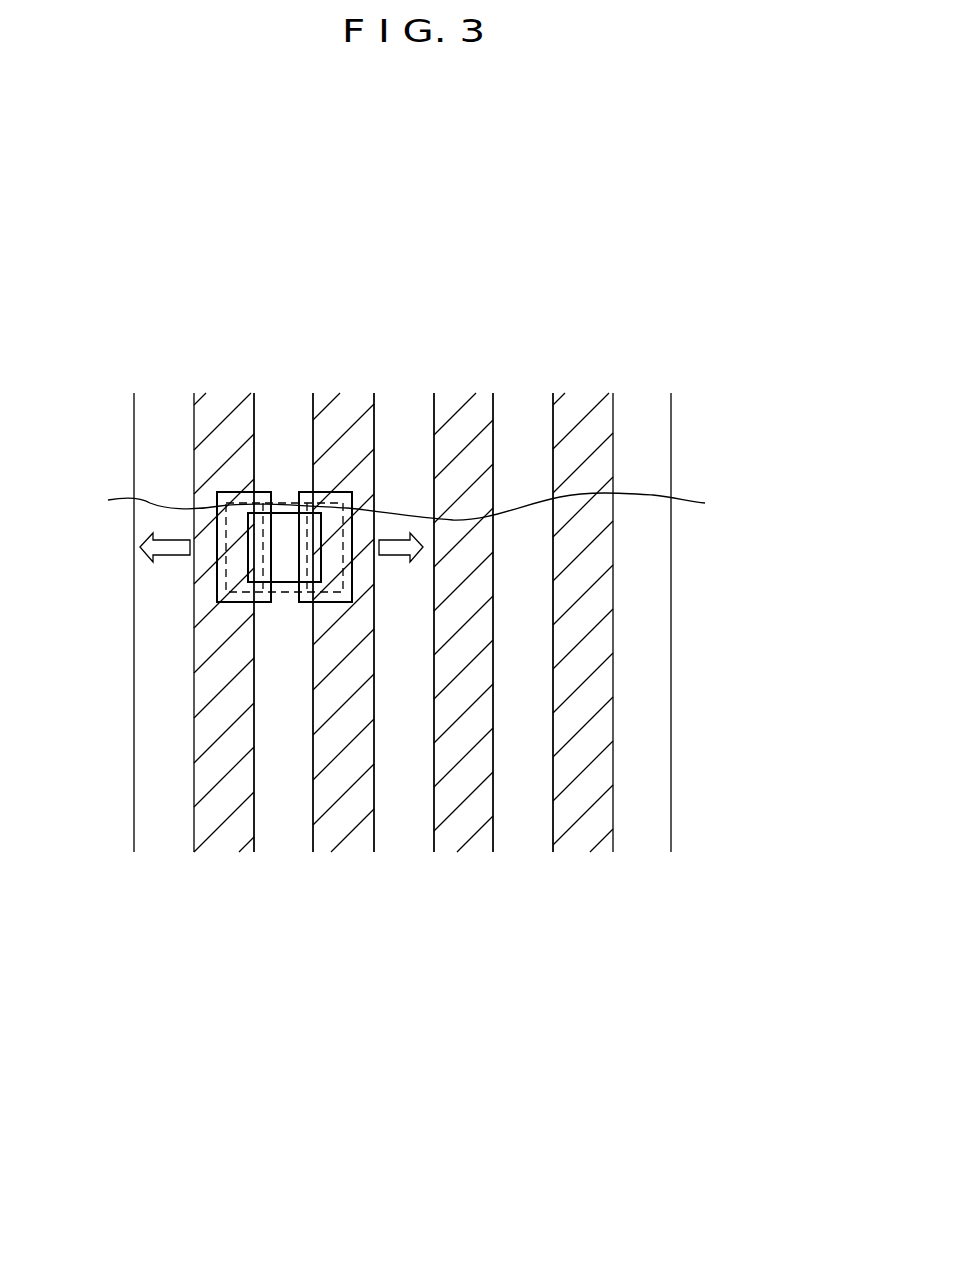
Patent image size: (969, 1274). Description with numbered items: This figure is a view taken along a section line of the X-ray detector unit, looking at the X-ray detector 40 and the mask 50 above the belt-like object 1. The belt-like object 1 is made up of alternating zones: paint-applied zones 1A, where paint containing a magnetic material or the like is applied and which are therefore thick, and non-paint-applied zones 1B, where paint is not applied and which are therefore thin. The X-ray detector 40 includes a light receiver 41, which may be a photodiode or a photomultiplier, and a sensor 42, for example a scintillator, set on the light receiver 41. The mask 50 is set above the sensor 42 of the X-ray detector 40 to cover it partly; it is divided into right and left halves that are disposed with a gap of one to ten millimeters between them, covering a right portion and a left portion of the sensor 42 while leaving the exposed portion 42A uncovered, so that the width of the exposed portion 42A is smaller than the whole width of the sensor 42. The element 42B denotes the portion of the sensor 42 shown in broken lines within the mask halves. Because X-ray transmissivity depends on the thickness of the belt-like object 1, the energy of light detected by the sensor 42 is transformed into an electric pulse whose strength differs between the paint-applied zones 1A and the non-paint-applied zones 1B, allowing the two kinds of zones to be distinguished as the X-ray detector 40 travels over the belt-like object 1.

The belt-like object 1 is at (644, 834).
The paint-applied zone 1A is at (217, 880).
The non-paint-applied zone 1B is at (529, 1038).
The X-ray detector 40 is at (238, 472).
The light receiver 41 is at (281, 512).
The sensor 42 is at (471, 431).
The exposed portion 42A is at (287, 525).
The sensor portion 42B is at (308, 505).
The mask 50 is at (396, 514).